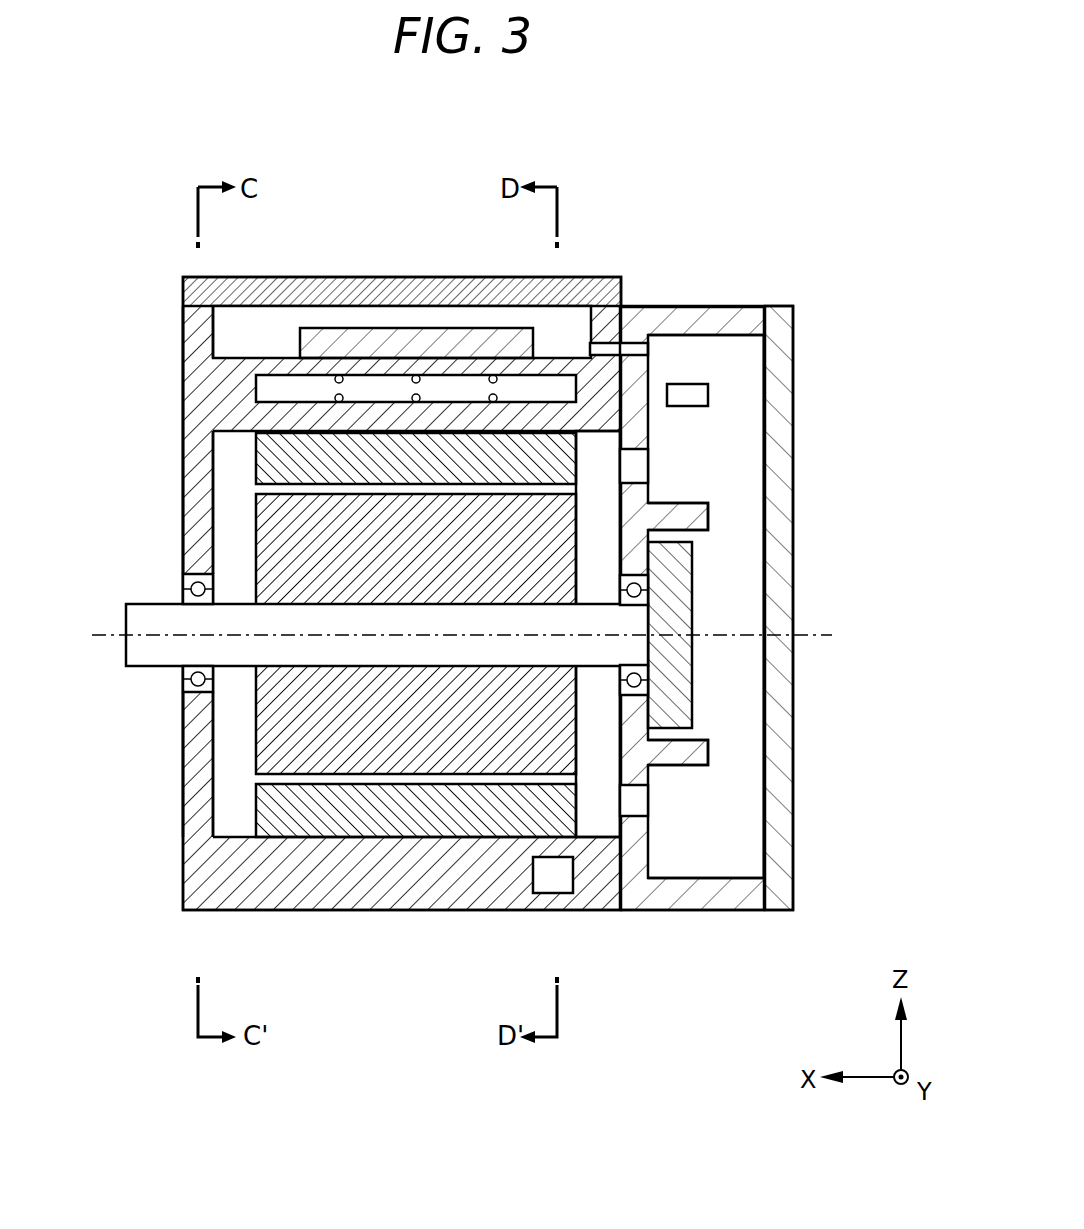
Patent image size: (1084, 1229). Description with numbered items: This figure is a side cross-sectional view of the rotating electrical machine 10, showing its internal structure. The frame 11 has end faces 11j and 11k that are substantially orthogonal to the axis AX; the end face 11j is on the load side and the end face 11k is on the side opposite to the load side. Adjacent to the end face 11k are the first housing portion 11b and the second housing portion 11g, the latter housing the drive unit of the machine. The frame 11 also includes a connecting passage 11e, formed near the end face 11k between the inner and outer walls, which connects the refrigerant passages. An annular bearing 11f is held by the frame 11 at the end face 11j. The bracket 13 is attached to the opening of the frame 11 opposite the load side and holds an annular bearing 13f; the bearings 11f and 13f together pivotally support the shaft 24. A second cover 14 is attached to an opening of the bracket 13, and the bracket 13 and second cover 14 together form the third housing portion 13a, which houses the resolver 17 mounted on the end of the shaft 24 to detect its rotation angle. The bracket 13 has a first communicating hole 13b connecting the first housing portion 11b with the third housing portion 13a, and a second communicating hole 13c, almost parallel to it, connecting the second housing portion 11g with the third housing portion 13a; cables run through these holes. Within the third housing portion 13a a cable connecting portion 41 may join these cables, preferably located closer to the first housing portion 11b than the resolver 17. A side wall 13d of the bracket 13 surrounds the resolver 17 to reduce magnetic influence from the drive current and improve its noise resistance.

The rotating electrical machine 10 is at (120, 166).
The frame 11 is at (167, 356).
The first housing portion 11b is at (283, 324).
The connecting passage 11e is at (540, 890).
The bearing 11f is at (185, 583).
The second housing portion 11g is at (602, 714).
The end face 11j is at (183, 402).
The end face 11k is at (628, 390).
The bracket 13 is at (715, 305).
The third housing portion 13a is at (748, 403).
The first communicating hole 13b is at (659, 349).
The second communicating hole 13c is at (660, 464).
The side wall 13d is at (702, 493).
The bearing 13f is at (645, 580).
The second cover 14 is at (794, 452).
The resolver 17 is at (683, 560).
The shaft 24 is at (143, 667).
The cable connecting portion 41 is at (710, 393).
The axis AX is at (444, 637).